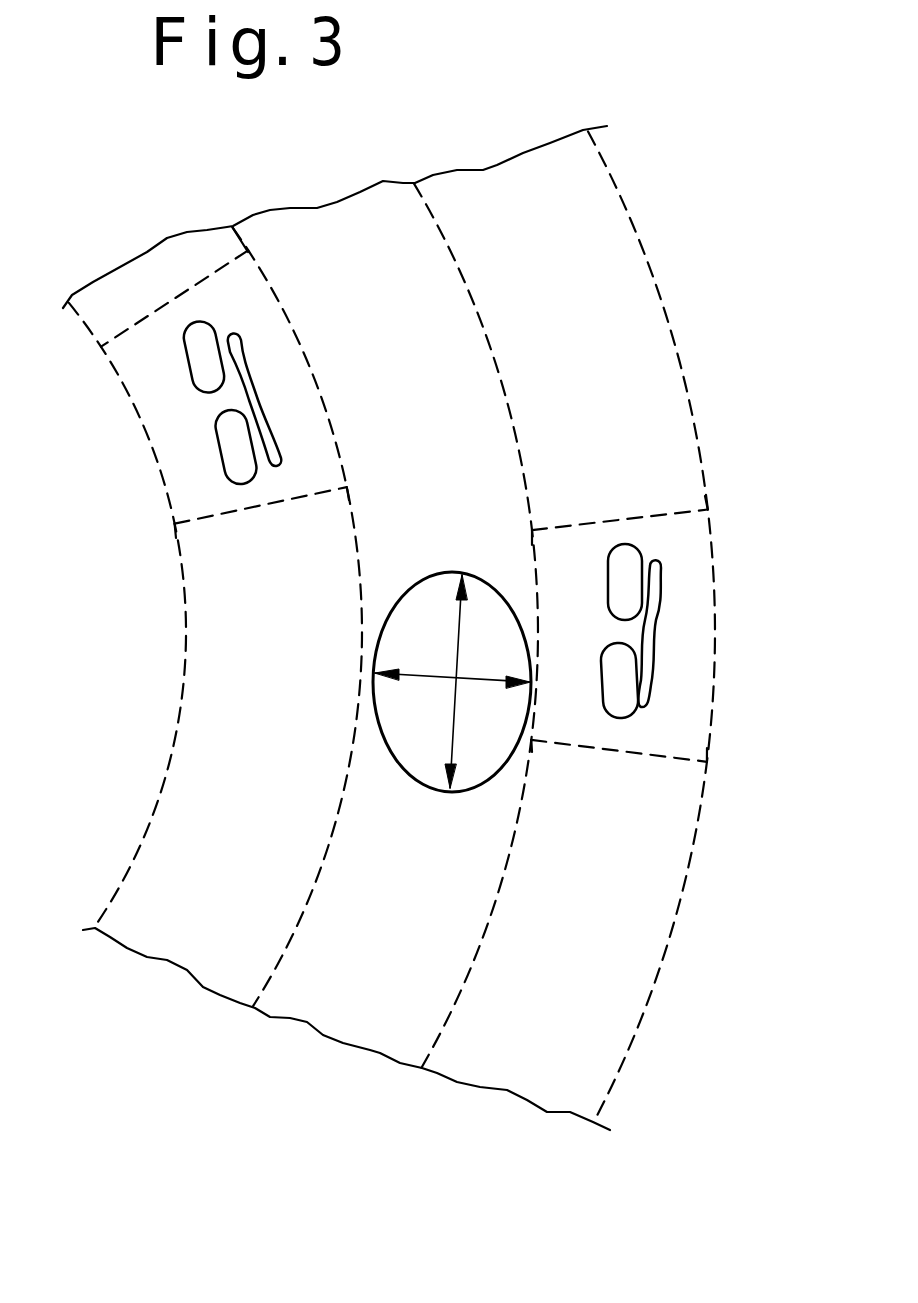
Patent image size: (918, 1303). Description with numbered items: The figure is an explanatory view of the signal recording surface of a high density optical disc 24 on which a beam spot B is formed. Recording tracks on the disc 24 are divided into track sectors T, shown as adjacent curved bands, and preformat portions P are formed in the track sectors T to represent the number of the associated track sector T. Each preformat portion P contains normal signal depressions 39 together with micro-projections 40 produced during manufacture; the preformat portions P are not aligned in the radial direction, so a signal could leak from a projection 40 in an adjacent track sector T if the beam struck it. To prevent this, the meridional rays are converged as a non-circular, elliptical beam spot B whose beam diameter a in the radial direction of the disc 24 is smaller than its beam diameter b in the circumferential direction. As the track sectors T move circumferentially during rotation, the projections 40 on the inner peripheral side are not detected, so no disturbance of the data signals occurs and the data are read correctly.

The optical disc 24 is at (665, 241).
The normal signal depressions 39 is at (215, 437).
The micro-projections 40 is at (250, 378).
The preformat portion P is at (148, 361).
The beam spot B is at (405, 648).
The beam diameter in the radial direction a is at (427, 673).
The beam diameter in the circumferential direction b is at (458, 632).
The track sector T is at (177, 947).